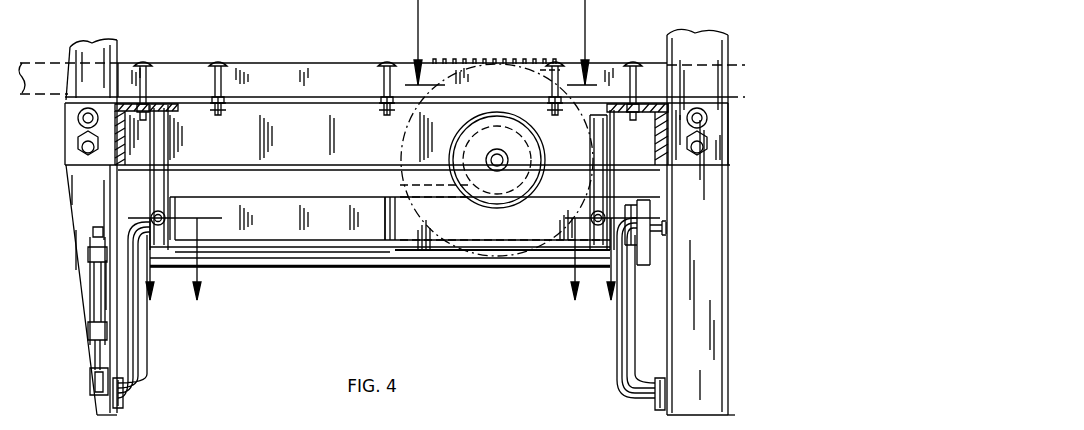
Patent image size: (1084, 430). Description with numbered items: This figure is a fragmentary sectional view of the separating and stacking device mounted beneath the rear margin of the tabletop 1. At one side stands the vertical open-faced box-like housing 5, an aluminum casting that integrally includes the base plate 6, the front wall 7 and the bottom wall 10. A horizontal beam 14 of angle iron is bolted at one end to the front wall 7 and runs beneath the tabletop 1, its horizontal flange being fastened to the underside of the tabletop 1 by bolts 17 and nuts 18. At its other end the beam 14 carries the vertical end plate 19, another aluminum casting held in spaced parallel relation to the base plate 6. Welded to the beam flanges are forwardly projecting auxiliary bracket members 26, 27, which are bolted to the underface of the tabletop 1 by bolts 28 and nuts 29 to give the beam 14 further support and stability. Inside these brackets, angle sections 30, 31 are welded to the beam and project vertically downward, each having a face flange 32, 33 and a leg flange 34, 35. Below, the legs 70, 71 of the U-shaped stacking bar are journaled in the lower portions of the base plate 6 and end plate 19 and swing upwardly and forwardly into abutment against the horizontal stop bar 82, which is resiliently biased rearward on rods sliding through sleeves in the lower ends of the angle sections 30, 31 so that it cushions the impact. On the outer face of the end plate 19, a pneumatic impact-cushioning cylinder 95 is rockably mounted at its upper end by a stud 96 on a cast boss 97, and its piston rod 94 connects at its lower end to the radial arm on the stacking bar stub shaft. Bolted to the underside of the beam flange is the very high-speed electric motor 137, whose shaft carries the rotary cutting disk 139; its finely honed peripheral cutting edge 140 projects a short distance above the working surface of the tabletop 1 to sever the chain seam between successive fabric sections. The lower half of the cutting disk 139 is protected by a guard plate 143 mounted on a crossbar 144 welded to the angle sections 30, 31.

The tabletop 1 is at (332, 70).
The box-like housing 5 is at (742, 220).
The base plate 6 is at (667, 302).
The front wall 7 is at (728, 306).
The bottom wall 10 is at (217, 2).
The horizontal beam 14 is at (282, 123).
The bolts 17 is at (224, 66).
The nuts 18 is at (216, 108).
The vertical end plate 19 is at (108, 42).
The auxiliary bracket member 26 is at (668, 134).
The auxiliary bracket member 27 is at (118, 130).
The bolts 28 is at (143, 64).
The nuts 29 is at (115, 118).
The angle section 30 is at (146, 147).
The angle section 31 is at (608, 174).
The face flange 32 is at (168, 184).
The face flange 33 is at (592, 150).
The leg flange 34 is at (158, 198).
The leg flange 35 is at (612, 196).
The leg 70 is at (617, 378).
The leg 71 is at (147, 378).
The stop bar 82 is at (287, 225).
The piston rod 94 is at (95, 360).
The pneumatic impact-cushioning cylinder 95 is at (92, 300).
The stud 96 is at (90, 250).
The boss 97 is at (94, 230).
The electric motor 137 is at (470, 202).
The rotary cutting disk 139 is at (482, 60).
The peripheral cutting edge 140 is at (496, 62).
The guard plate 143 is at (408, 230).
The crossbar 144 is at (355, 262).